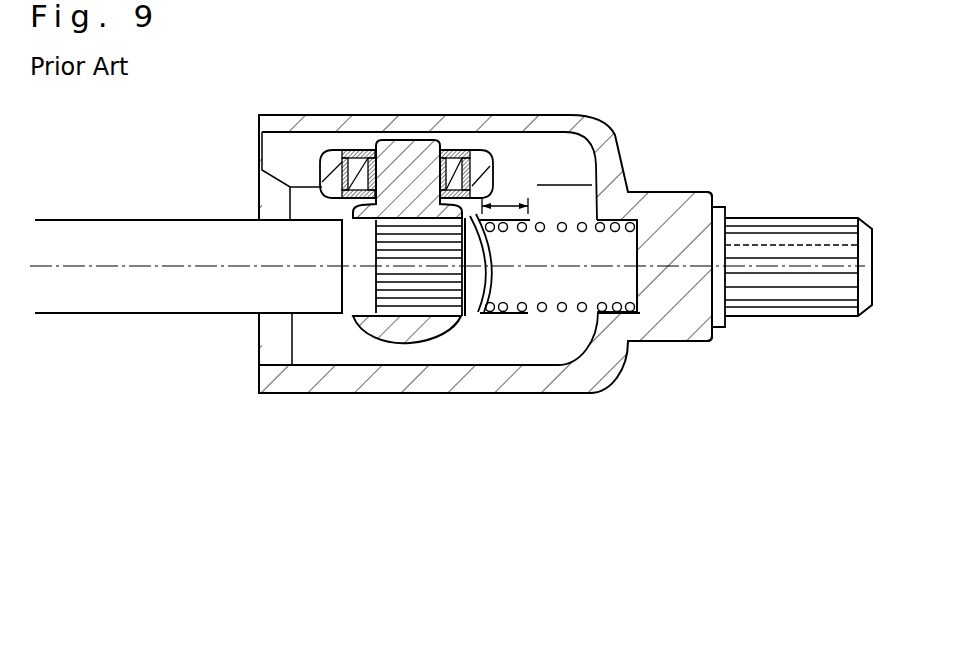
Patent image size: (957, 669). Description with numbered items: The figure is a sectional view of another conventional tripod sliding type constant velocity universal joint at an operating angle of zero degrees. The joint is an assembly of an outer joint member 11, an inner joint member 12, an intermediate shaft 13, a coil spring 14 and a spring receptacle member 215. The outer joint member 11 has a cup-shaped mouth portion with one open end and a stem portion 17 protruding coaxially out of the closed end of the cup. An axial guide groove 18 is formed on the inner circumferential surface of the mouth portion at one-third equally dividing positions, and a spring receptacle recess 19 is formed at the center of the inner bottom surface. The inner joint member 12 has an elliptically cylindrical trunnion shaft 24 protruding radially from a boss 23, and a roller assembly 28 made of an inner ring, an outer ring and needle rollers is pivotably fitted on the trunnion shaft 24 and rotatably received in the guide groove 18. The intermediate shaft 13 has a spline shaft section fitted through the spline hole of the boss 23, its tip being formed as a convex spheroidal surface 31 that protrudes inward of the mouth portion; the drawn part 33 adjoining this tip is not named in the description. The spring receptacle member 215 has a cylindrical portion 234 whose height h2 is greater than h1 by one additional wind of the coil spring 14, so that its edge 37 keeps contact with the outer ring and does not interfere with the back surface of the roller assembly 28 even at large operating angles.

The outer joint member 11 is at (468, 113).
The inner joint member 12 is at (365, 343).
The intermediate shaft 13 is at (82, 210).
The coil spring 14 is at (582, 328).
The stem portion 17 is at (810, 207).
The axial guide groove 18 is at (570, 152).
The spring receptacle recess 19 is at (628, 192).
The boss 23 is at (413, 337).
The trunnion shaft 24 is at (396, 148).
The roller assembly 28 is at (502, 148).
The convex spheroidal surface 31 is at (465, 302).
The spherical cap 33 is at (494, 268).
The edge 37 is at (597, 163).
The spring receptacle member 215 is at (526, 330).
The cylindrical portion 234 is at (507, 317).